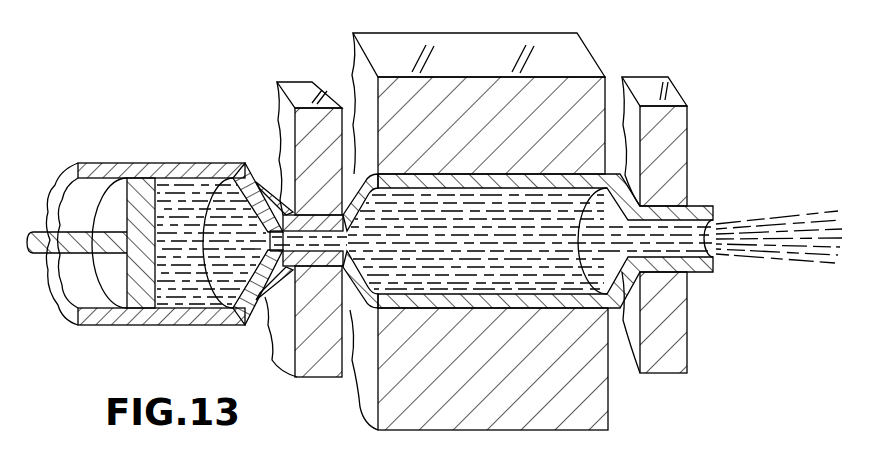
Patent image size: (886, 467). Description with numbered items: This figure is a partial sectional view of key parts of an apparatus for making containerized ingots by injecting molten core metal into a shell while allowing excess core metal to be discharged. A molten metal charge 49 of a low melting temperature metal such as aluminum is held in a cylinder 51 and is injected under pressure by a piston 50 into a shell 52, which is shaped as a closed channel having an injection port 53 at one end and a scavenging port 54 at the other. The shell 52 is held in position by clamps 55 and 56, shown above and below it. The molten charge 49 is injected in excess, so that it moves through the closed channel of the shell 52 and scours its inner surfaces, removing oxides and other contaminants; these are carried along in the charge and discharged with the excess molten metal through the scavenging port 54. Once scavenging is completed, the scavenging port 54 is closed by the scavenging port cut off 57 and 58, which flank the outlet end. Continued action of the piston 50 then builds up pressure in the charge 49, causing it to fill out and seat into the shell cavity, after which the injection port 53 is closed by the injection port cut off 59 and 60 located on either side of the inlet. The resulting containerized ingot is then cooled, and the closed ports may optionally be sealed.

The molten metal charge 49 is at (177, 227).
The piston 50 is at (142, 290).
The cylinder 51 is at (189, 326).
The shell 52 is at (372, 302).
The injection port 53 is at (322, 237).
The scavenging port 54 is at (710, 237).
The clamp 55 is at (562, 88).
The clamp 56 is at (603, 380).
The scavenging port cut off 57 is at (673, 128).
The scavenging port cut off 58 is at (673, 322).
The injection port cut off 59 is at (302, 123).
The injection port cut off 60 is at (308, 342).